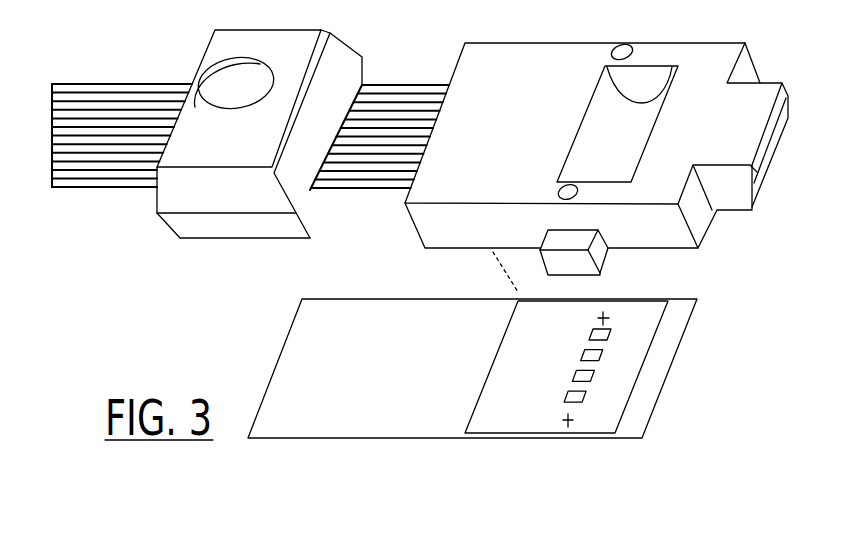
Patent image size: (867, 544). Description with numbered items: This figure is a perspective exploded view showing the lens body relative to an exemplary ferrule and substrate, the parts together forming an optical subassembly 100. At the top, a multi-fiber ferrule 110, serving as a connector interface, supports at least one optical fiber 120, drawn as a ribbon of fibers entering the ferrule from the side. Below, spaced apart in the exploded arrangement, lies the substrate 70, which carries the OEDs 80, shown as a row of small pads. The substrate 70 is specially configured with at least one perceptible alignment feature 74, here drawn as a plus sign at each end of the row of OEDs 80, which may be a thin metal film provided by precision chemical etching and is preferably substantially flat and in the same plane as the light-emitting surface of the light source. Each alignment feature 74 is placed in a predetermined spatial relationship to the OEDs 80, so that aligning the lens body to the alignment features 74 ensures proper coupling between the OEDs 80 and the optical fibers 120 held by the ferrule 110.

The optical subassembly 100 is at (130, 240).
The optical fiber 120 is at (357, 157).
The multi-fiber ferrule 110 is at (453, 223).
The substrate 70 is at (472, 373).
The alignment feature 74 is at (599, 373).
The OEDs 80 is at (567, 397).